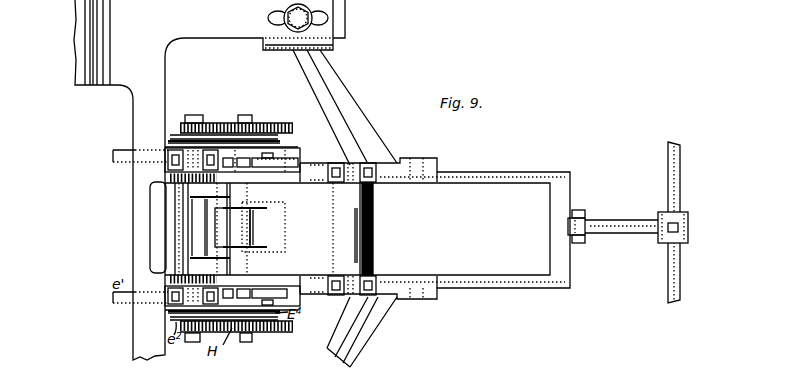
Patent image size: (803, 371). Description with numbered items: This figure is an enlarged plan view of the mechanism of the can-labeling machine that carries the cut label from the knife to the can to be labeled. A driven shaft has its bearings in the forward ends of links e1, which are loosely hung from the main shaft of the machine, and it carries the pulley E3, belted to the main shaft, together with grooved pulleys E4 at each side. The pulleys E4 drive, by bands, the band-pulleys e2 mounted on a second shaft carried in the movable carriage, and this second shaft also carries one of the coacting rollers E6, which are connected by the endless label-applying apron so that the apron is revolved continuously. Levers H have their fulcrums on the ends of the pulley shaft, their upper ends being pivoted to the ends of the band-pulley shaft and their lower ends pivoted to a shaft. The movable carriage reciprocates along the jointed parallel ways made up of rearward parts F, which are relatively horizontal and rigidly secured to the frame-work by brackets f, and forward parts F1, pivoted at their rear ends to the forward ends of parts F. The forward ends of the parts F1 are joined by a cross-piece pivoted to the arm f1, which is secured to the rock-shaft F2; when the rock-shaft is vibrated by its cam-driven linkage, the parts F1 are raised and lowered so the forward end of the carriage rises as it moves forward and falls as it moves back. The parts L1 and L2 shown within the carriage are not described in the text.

The links e1 is at (140, 148).
The band-pulleys e2 is at (173, 127).
The levers H is at (213, 131).
The grooved pulleys E4 is at (279, 142).
The forward parts of carriage-ways F1 is at (490, 175).
The rearward parts of carriage-ways F is at (322, 295).
The brackets f is at (356, 106).
The roller E6 is at (175, 223).
The bracket L1 is at (198, 203).
The bracket L2 is at (267, 207).
The pulley E3 is at (258, 241).
The arm f1 is at (642, 227).
The rock-shaft F2 is at (673, 273).